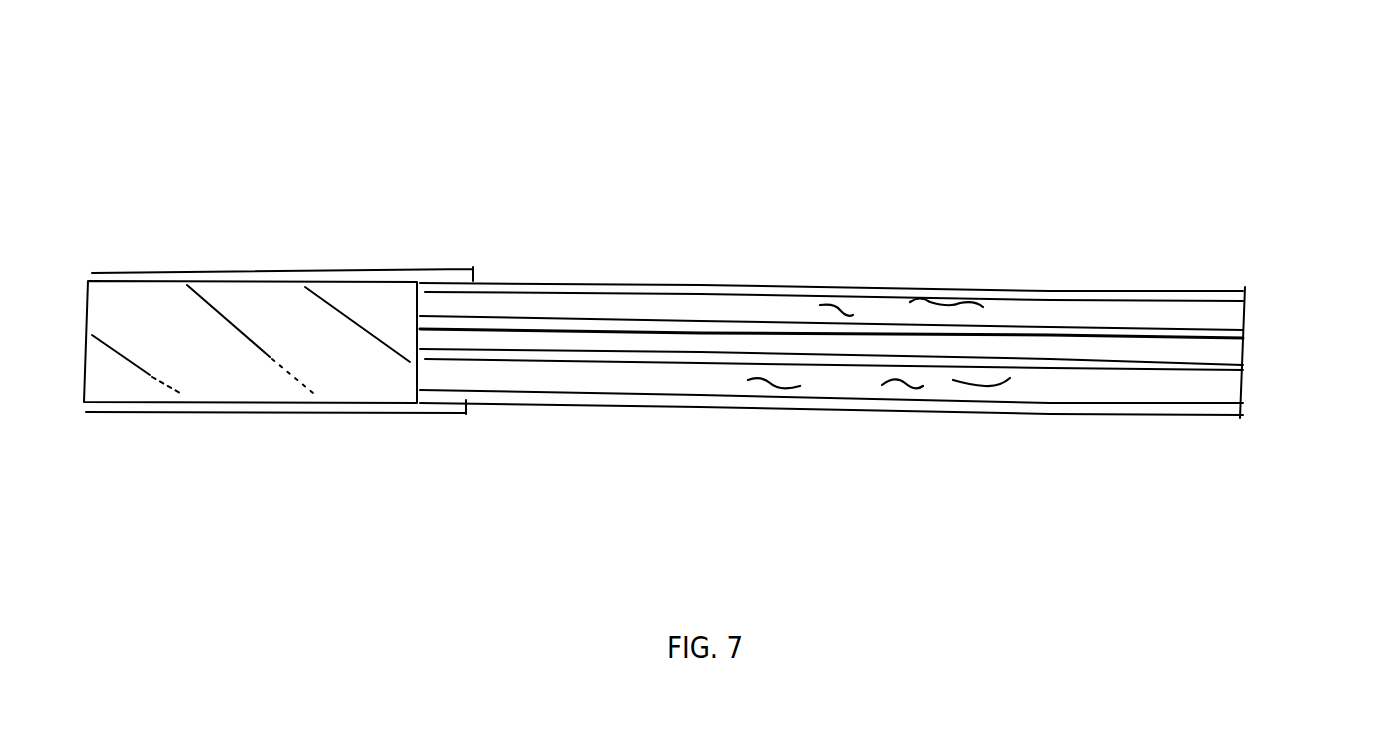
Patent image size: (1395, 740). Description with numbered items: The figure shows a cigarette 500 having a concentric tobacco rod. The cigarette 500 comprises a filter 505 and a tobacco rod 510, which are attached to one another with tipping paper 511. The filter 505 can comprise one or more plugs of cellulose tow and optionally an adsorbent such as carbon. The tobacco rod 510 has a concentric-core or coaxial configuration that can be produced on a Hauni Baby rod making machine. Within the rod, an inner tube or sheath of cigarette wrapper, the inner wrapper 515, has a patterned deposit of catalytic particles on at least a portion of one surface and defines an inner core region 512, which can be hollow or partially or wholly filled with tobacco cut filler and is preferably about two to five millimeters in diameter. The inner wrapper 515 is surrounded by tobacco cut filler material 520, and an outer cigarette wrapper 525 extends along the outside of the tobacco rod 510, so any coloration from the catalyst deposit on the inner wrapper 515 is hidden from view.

The cigarette 500 is at (970, 152).
The tipping paper 511 is at (225, 271).
The filter 505 is at (340, 310).
The tobacco rod 510 is at (640, 283).
The tobacco cut filler material 520 is at (772, 303).
The inner wrapper 515 is at (1098, 328).
The inner core region 512 is at (1226, 351).
The outer cigarette wrapper 525 is at (1123, 412).